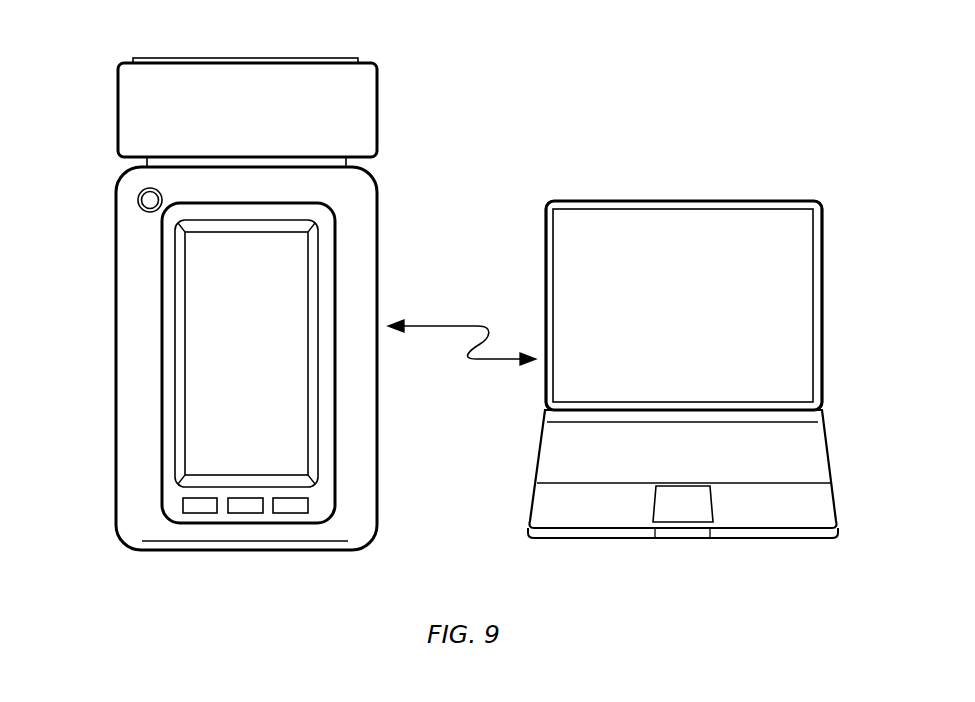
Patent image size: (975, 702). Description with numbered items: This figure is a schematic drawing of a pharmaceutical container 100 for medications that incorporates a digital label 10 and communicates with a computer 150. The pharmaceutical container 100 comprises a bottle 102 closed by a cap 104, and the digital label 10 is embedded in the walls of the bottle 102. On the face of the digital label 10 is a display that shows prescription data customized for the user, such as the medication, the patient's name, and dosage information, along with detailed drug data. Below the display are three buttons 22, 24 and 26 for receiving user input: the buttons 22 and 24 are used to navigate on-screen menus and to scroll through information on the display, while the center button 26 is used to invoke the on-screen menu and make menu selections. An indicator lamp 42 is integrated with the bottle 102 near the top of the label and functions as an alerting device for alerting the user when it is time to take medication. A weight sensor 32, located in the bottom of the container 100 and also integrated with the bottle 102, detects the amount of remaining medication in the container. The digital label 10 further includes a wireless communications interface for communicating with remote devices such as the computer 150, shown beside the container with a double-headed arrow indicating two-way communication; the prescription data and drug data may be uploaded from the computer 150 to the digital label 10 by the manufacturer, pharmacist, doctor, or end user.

The pharmaceutical container 100 is at (238, 298).
The cap 104 is at (163, 58).
The bottle 102 is at (112, 326).
The indicator lamp 42 is at (140, 193).
The digital label 10 is at (331, 243).
The button 22 is at (200, 513).
The center button 26 is at (242, 513).
The button 24 is at (290, 513).
The weight sensor 32 is at (340, 538).
The computer 150 is at (825, 225).